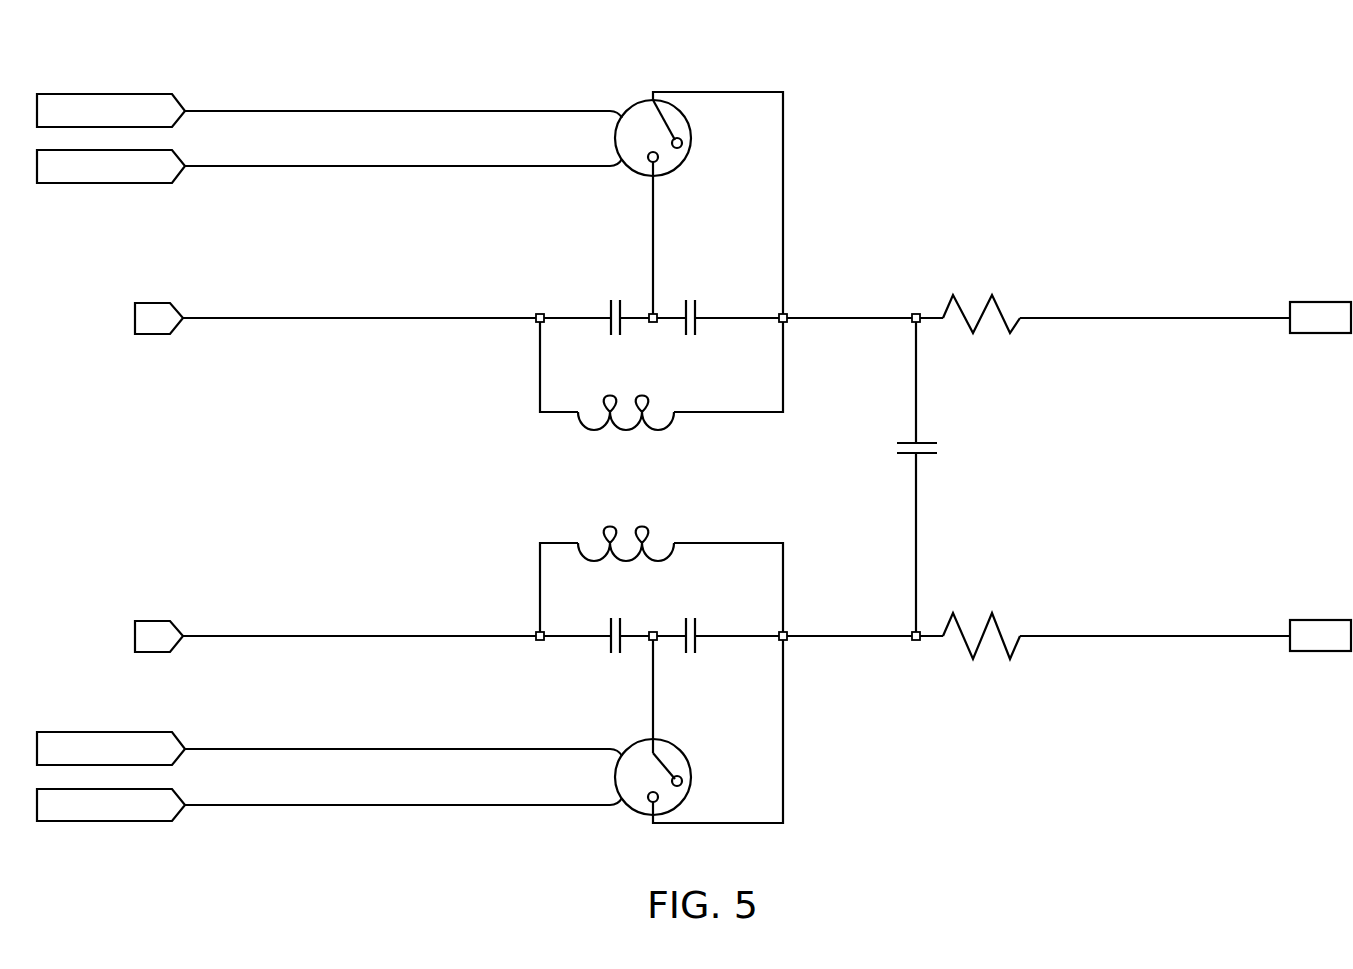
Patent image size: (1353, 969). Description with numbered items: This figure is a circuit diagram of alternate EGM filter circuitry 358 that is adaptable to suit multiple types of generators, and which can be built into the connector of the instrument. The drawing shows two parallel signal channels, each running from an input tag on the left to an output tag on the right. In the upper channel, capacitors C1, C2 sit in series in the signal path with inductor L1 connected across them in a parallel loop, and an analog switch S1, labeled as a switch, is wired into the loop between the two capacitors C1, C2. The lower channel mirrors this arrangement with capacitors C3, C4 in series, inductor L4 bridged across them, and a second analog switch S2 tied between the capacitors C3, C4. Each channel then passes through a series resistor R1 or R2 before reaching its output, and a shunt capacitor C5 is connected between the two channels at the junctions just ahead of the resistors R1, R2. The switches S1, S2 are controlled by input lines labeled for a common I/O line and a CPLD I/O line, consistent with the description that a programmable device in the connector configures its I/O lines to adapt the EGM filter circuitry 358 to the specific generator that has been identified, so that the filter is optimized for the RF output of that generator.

The EGM filter circuitry 358 is at (1210, 68).
The resistor R1 is at (981, 316).
The resistor R2 is at (981, 636).
The capacitor C1 is at (621, 319).
The capacitor C2 is at (693, 319).
The capacitor C3 is at (621, 639).
The capacitor C4 is at (693, 639).
The capacitor C5 is at (937, 451).
The inductor L1 is at (626, 422).
The inductor L4 is at (626, 547).
The switch S1 is at (677, 138).
The switch S2 is at (735, 766).